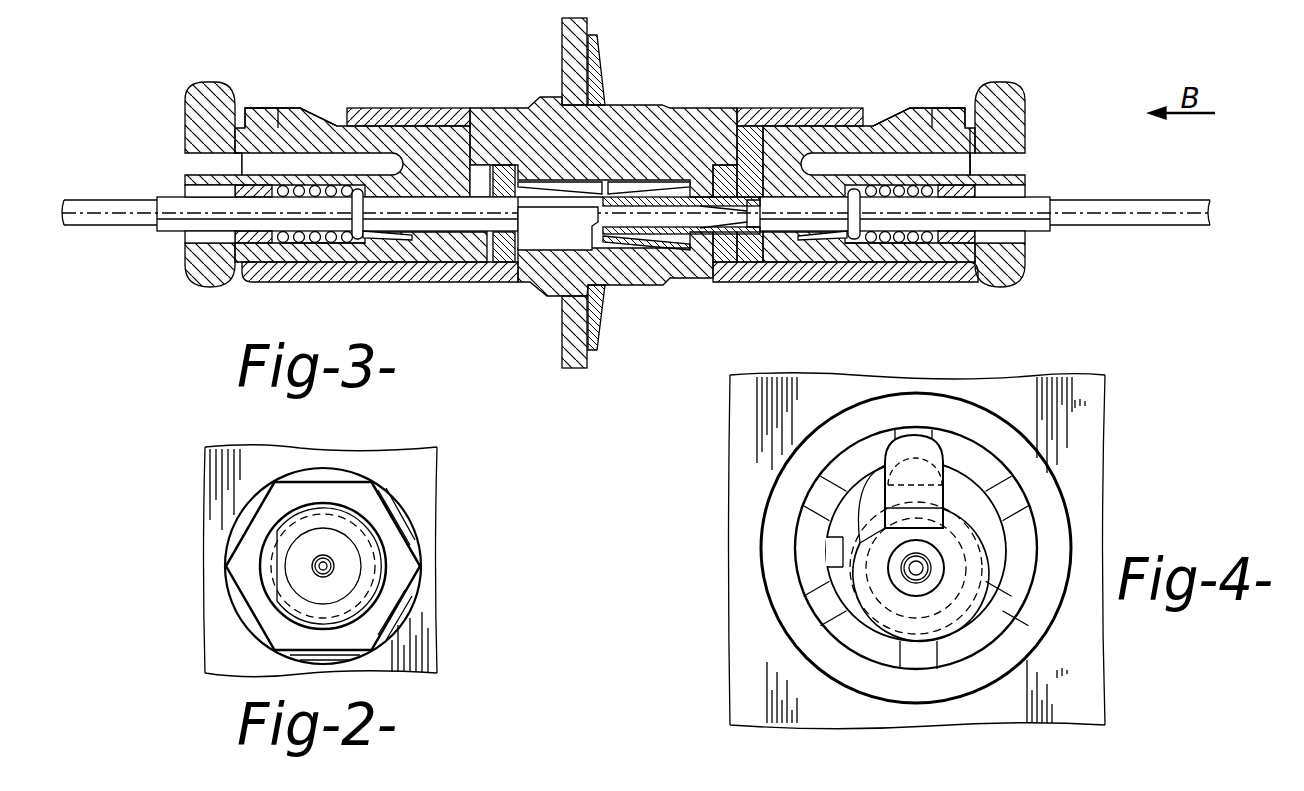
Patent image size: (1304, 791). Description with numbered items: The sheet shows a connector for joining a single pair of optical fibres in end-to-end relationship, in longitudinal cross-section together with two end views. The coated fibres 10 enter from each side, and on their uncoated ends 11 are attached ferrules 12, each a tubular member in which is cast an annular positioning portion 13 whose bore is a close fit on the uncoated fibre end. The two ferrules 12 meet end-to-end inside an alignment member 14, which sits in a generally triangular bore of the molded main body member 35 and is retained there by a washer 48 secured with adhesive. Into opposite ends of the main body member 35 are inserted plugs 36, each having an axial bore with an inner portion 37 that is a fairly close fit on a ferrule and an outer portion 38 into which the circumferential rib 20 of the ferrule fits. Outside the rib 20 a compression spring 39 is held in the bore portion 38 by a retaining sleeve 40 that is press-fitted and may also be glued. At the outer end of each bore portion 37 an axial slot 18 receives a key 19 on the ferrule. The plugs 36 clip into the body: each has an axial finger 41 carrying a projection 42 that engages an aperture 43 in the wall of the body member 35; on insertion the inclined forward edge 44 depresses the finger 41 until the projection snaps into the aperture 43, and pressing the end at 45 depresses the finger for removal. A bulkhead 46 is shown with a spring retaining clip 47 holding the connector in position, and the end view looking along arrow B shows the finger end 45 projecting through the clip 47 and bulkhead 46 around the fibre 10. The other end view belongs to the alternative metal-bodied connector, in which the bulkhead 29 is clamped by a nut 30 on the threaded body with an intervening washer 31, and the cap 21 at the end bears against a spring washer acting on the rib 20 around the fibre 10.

In FIG. 3, the coated fibres 10 is at (112, 200).
In FIG. 4, the coated fibres 10 is at (910, 568).
In FIG. 3, the uncoated fibre ends 11 is at (700, 212).
In FIG. 3, the ferrules 12 is at (173, 208).
In FIG. 3, the annular positioning portion 13 is at (625, 244).
In FIG. 3, the alignment member 14 is at (572, 302).
In FIG. 3, the axial slot 18 is at (480, 197).
In FIG. 3, the key 19 is at (400, 242).
In FIG. 3, the circumferential rib 20 is at (360, 242).
In FIG. 2, the cap 21 is at (317, 536).
In FIG. 2, the bulkhead 29 is at (420, 461).
In FIG. 2, the nut 30 is at (408, 566).
In FIG. 2, the washer 31 is at (243, 600).
In FIG. 3, the main body member 35 is at (503, 130).
In FIG. 3, the plugs 36 is at (430, 140).
In FIG. 3, the inner bore portion 37 is at (505, 185).
In FIG. 3, the outer bore portion 38 is at (335, 258).
In FIG. 3, the compression spring 39 is at (303, 244).
In FIG. 3, the retaining sleeve 40 is at (268, 244).
In FIG. 3, the axial finger 41 is at (327, 133).
In FIG. 3, the projection 42 is at (290, 110).
In FIG. 3, the aperture 43 is at (348, 116).
In FIG. 3, the inclined forward edge 44 is at (318, 122).
In FIG. 3, the finger end 45 is at (220, 100).
In FIG. 4, the finger end 45 is at (907, 448).
In FIG. 3, the bulkhead 46 is at (560, 38).
In FIG. 4, the bulkhead 46 is at (1085, 428).
In FIG. 3, the spring retaining clip 47 is at (606, 63).
In FIG. 4, the spring retaining clip 47 is at (1033, 470).
In FIG. 3, the washer 48 is at (550, 230).